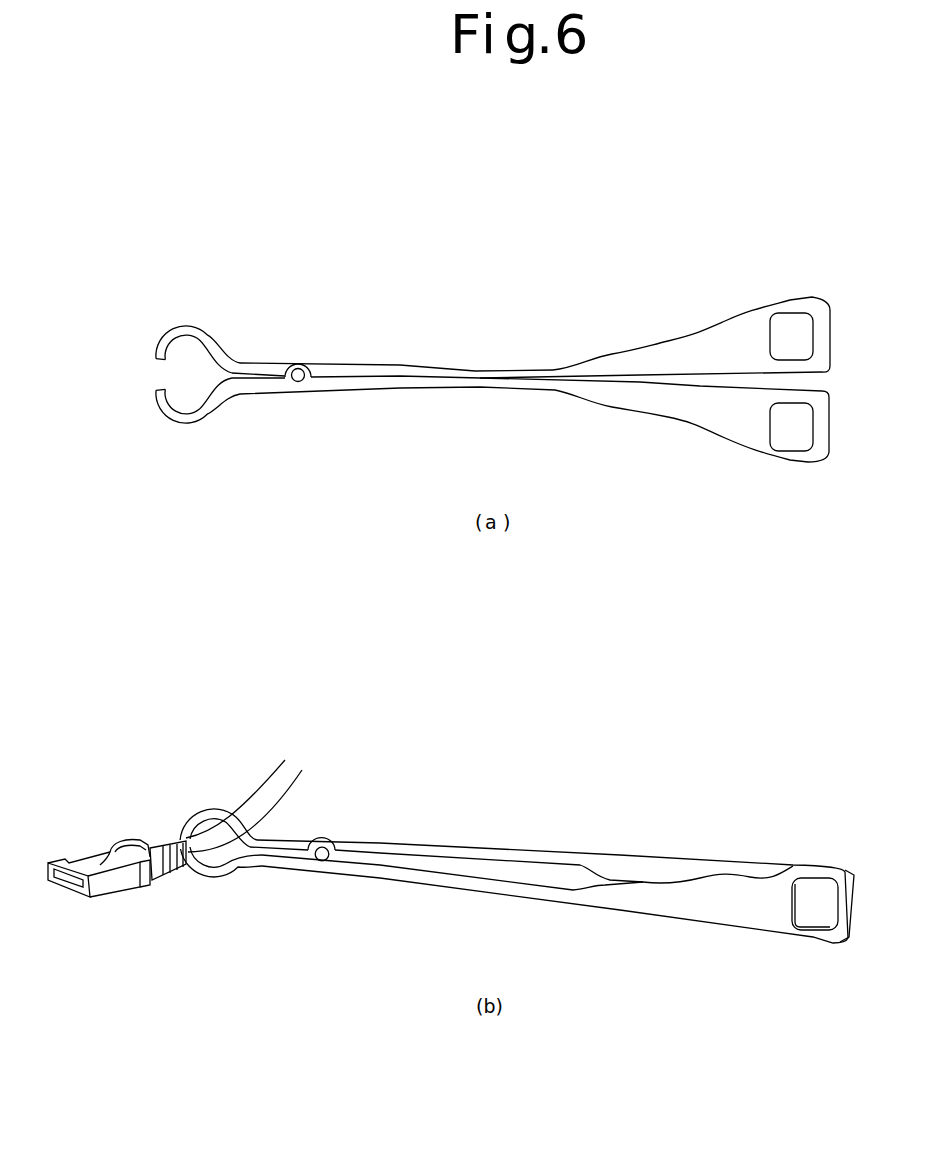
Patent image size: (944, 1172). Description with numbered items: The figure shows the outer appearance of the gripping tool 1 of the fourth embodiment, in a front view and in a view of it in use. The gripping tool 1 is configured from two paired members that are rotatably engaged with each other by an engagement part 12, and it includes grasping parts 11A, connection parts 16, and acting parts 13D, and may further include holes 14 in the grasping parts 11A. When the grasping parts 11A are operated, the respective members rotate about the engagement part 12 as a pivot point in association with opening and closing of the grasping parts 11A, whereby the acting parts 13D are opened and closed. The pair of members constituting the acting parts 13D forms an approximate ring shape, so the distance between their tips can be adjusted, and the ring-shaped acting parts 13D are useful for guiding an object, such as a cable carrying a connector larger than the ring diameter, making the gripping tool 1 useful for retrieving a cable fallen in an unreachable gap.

The gripping tool 1 is at (151, 194).
The grasping parts 11A is at (726, 320).
The engagement part 12 is at (297, 382).
The acting parts 13D is at (183, 426).
The holes 14 is at (797, 438).
The connection parts 16 is at (553, 265).